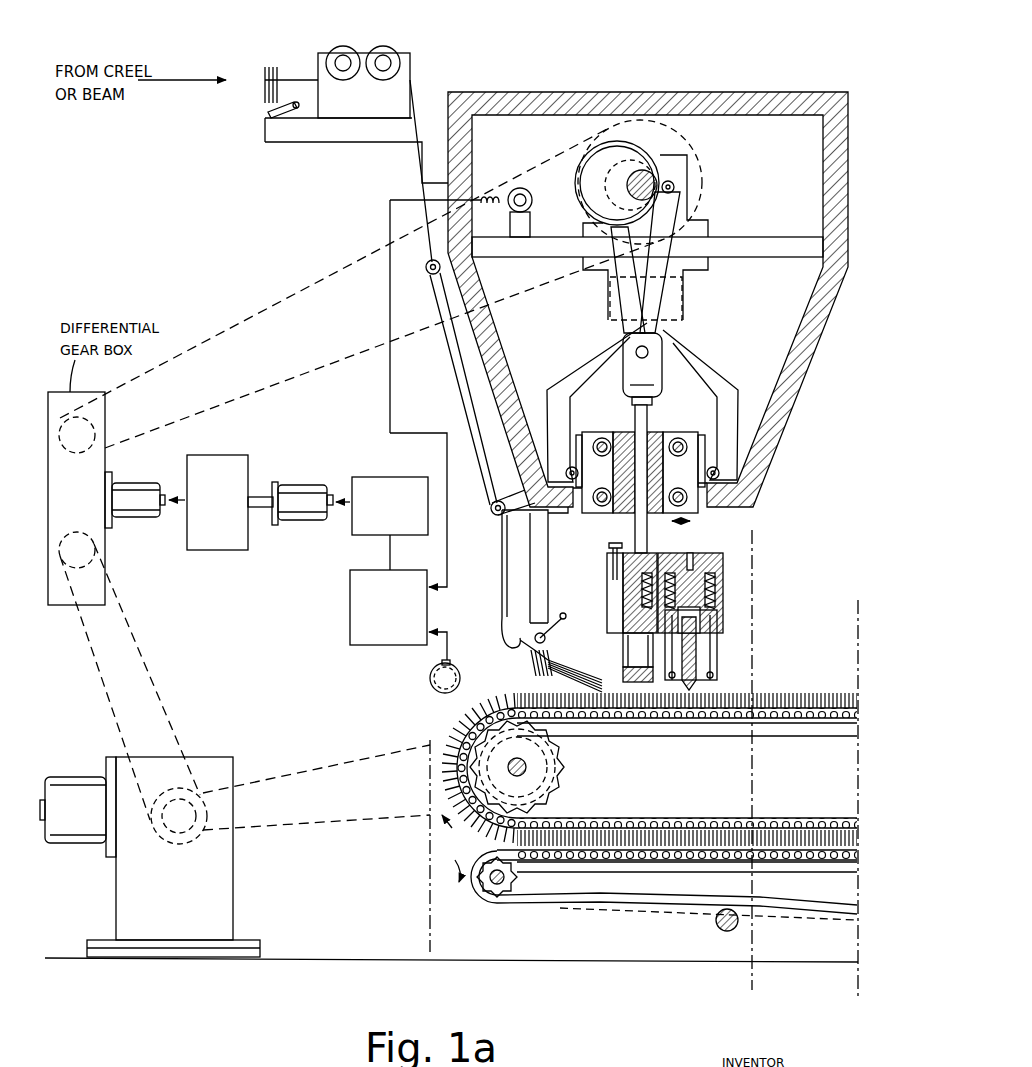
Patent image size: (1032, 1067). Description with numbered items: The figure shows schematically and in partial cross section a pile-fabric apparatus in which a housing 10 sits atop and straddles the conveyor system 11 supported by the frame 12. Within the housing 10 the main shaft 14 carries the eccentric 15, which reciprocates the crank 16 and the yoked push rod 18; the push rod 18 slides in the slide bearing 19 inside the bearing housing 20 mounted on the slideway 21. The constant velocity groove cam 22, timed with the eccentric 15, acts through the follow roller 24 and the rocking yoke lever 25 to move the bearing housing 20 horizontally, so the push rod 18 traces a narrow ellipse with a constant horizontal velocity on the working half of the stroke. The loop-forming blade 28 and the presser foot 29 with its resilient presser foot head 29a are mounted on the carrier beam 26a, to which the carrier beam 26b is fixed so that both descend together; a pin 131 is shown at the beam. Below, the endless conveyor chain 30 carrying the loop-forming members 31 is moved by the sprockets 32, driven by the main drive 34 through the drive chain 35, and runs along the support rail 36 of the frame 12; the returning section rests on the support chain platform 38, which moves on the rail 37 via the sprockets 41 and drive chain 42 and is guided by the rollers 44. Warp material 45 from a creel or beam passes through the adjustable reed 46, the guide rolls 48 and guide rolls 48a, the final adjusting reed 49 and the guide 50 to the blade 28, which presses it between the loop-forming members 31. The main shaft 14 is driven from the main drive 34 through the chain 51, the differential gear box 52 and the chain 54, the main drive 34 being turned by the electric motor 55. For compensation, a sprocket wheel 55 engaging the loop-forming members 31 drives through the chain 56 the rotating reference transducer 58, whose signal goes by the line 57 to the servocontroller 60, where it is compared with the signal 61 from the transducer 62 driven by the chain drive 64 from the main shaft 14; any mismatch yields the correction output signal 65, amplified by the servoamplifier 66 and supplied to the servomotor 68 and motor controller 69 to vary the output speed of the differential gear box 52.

The housing 10 is at (748, 92).
The conveyor system 11 is at (413, 783).
The frame 12 is at (430, 906).
The main shaft 14 is at (645, 170).
The eccentric 15 is at (604, 150).
The crank 16 is at (597, 257).
The yoked push rod 18 is at (647, 405).
The slide bearing 19 is at (628, 422).
The bearing housing 20 is at (655, 428).
The slideway 21 is at (686, 445).
The constant velocity groove cam 22 is at (688, 165).
The follow roller 24 is at (676, 190).
The rocking yoke lever 25 is at (702, 335).
The carrier beam 26a is at (668, 531).
The carrier beam 26b is at (722, 555).
The pin 131 is at (690, 552).
The loop-forming blade 28 is at (563, 670).
The presser foot 29 is at (639, 682).
The resilient presser foot head 29a is at (629, 688).
The endless conveyor chain 30 is at (603, 818).
The loop-forming members 31 is at (442, 722).
The sprockets 32 is at (562, 770).
The main drive 34 is at (233, 889).
The drive chain 35 is at (302, 770).
The support rail 36 is at (720, 737).
The rail 37 is at (682, 870).
The support chain platform 38 is at (606, 900).
The sprockets 41 is at (515, 882).
The drive chain 42 is at (480, 845).
The rollers 44 is at (740, 925).
The warp material 45 is at (192, 78).
The adjustable reed 46 is at (265, 100).
The guide rolls 48 is at (384, 46).
The guide rolls 48a is at (433, 275).
The final adjusting reed 49 is at (557, 630).
The guide 50 is at (552, 655).
The chain 51 is at (158, 688).
The differential gear box 52 is at (107, 553).
The chain 54 is at (240, 330).
The electric motor 55 is at (76, 776).
The chain 56 is at (445, 694).
The signal line 57 is at (448, 630).
The rotating reference transducer 58 is at (432, 672).
The servocontroller 60 is at (350, 607).
The signal 61 is at (447, 498).
The transducer 62 is at (528, 192).
The chain drive 64 is at (533, 224).
The correction output signal 65 is at (390, 556).
The servoamplifier 66 is at (385, 477).
The servomotor 68 is at (292, 483).
The motor controller 69 is at (228, 456).